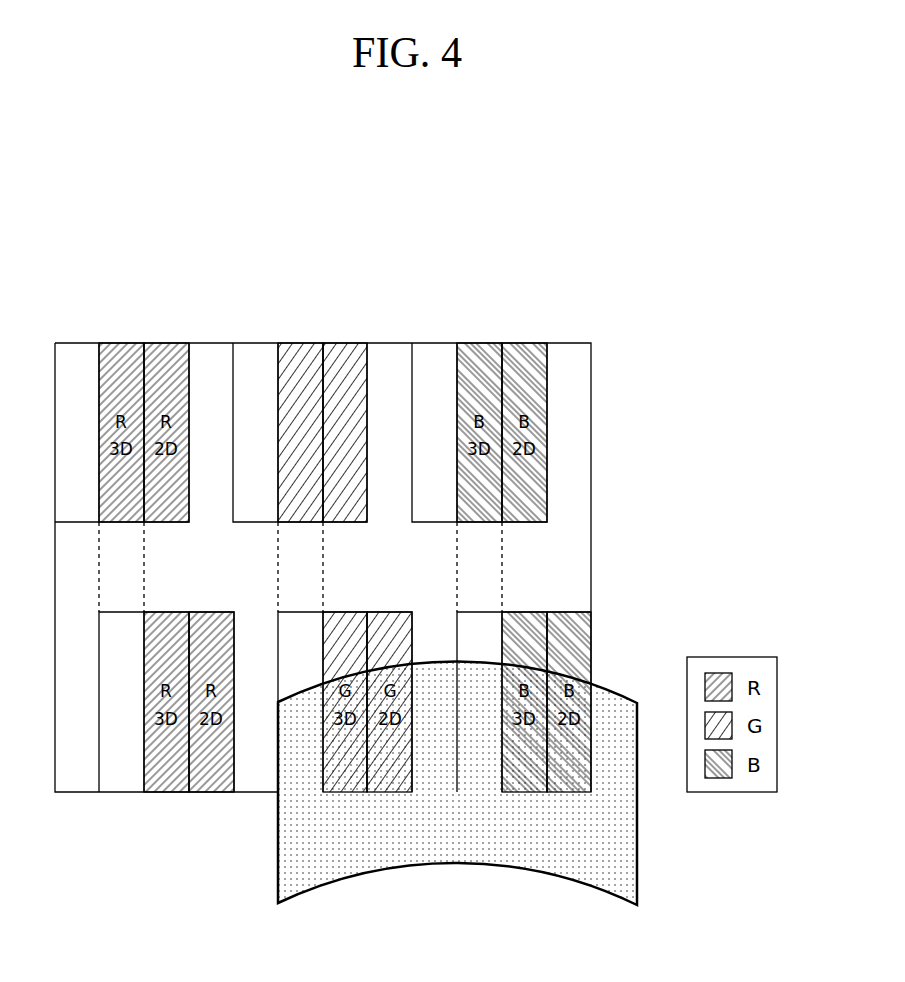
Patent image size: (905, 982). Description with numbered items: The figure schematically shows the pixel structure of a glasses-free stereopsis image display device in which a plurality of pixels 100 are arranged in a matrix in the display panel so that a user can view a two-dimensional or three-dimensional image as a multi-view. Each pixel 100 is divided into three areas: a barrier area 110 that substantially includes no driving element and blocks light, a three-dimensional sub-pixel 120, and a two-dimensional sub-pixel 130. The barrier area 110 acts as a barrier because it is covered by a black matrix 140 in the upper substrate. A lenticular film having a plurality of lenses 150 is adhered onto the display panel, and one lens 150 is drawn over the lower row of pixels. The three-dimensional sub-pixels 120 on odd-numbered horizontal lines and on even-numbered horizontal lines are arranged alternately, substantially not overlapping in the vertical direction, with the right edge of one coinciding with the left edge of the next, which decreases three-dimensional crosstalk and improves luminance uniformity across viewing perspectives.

The pixel 100 is at (300, 384).
The barrier area 110 is at (256, 358).
The 3D sub-pixel 120 is at (300, 358).
The 2D sub-pixel 130 is at (345, 407).
The black matrix 140 is at (567, 553).
The lens 150 is at (500, 833).